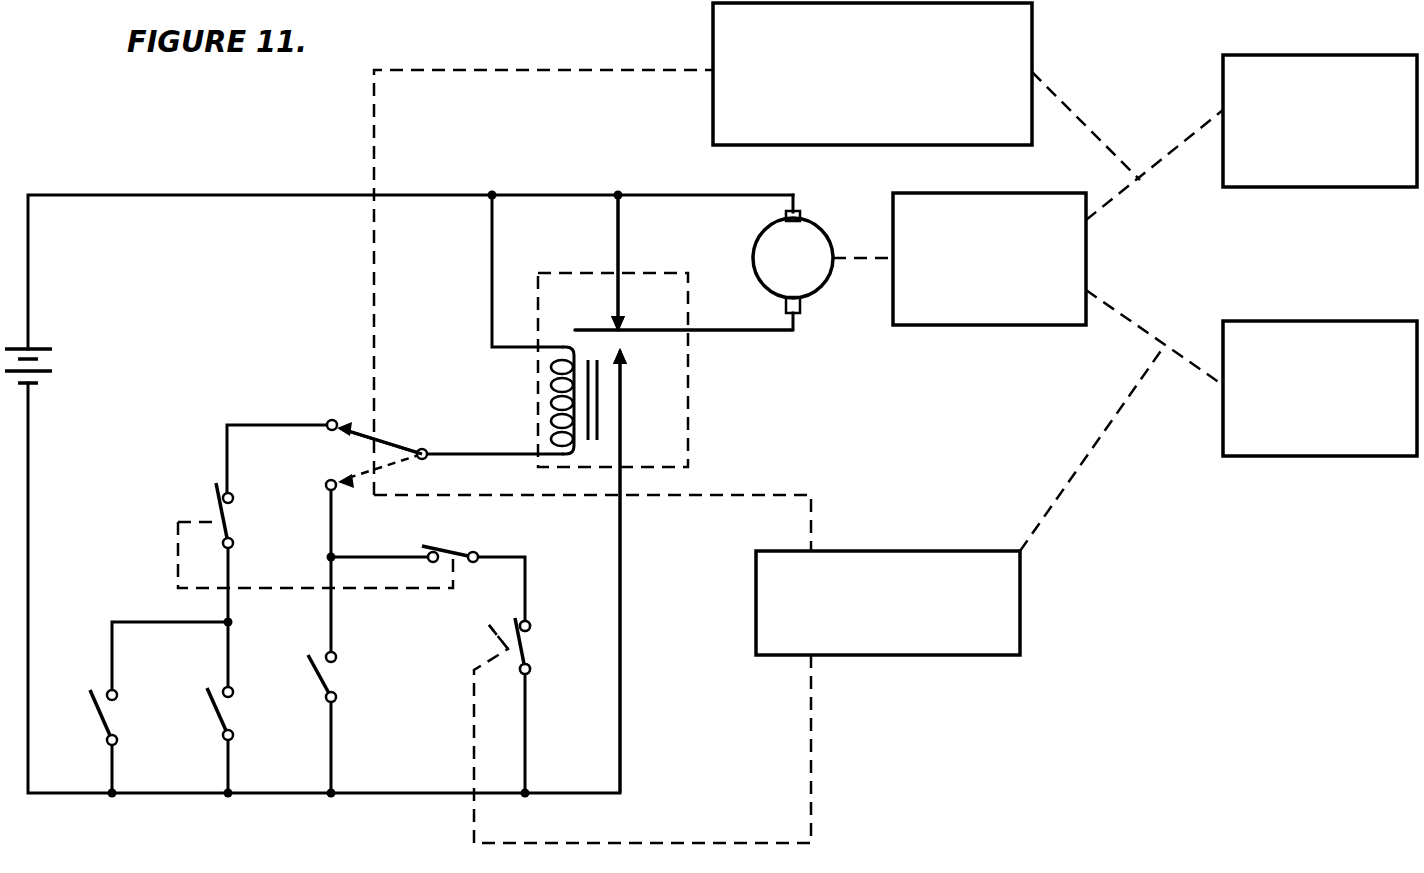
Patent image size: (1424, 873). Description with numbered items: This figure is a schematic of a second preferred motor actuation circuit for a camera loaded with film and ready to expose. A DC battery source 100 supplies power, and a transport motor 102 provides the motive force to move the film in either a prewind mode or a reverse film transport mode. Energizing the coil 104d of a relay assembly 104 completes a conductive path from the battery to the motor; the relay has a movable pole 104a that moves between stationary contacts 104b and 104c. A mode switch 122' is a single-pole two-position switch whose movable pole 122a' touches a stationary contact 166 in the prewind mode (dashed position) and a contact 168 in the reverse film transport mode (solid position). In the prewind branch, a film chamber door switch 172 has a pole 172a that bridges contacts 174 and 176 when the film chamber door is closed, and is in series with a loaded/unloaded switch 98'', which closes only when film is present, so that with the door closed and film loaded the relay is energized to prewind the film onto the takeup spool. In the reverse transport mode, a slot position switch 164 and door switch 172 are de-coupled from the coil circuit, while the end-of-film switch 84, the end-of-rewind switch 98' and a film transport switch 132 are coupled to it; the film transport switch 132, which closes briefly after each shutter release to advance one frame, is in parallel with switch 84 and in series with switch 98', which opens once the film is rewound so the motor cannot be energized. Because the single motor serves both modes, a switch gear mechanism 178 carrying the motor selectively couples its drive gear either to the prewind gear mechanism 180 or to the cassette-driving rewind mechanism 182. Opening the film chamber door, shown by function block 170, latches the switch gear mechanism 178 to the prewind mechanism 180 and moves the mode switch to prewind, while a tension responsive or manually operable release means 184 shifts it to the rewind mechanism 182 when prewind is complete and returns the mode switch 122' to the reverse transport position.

The DC battery source 100 is at (56, 352).
The motor 102 is at (805, 240).
The relay assembly 104 is at (688, 397).
The movable pole 104a is at (587, 328).
The stationary contact 104b is at (626, 326).
The stationary contact 104c is at (626, 351).
The coil 104d is at (560, 412).
The mode switch 122' is at (329, 455).
The movable pole 122a' is at (404, 413).
The contact 168 is at (331, 420).
The stationary contact 166 is at (334, 491).
The end-of-film switch 98' is at (257, 515).
The loaded/unloaded switch 98'' is at (478, 533).
The film chamber door switch 172 is at (535, 620).
The pole 172a is at (497, 626).
The contact 176 is at (529, 621).
The contact 174 is at (530, 674).
The film transport switch 132 is at (122, 690).
The end-of-film switch 84 is at (240, 686).
The slot position switch 164 is at (342, 650).
The tension responsive or manually operable release means 184 is at (950, 135).
The switch gear mechanism 178 is at (976, 313).
The rewind mechanism 182 is at (1305, 175).
The prewind gear mechanism 180 is at (1318, 445).
The function block 170 is at (1008, 575).